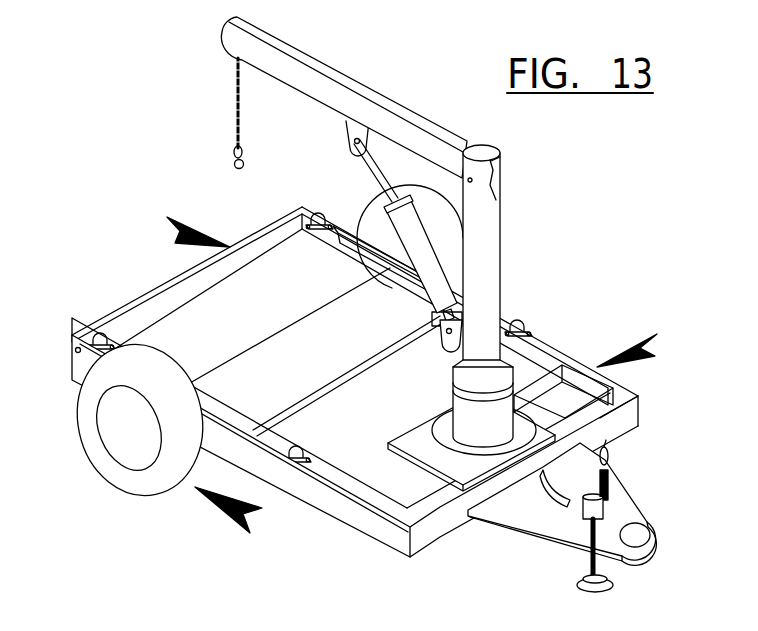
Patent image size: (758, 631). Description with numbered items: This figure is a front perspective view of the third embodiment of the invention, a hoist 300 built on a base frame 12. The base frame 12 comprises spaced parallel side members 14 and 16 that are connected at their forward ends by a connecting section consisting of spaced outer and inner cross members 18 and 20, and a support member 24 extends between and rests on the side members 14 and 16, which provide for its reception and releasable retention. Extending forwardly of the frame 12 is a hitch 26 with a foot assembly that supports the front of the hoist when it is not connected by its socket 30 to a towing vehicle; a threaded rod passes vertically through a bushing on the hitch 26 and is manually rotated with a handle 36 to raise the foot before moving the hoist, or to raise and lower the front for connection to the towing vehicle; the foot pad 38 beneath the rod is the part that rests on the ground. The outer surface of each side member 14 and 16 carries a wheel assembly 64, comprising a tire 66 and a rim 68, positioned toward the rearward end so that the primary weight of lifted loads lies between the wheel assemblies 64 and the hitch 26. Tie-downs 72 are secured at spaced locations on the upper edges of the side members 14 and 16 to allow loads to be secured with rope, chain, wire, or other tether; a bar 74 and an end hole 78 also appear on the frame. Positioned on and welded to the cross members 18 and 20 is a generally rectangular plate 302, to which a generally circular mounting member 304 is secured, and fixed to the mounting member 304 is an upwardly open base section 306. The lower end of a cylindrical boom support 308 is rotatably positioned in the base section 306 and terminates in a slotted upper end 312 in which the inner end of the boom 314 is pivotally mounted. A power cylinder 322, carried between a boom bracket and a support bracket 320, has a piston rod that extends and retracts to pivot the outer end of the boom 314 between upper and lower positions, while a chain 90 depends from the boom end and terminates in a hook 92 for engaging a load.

The base frame 12 is at (656, 340).
The side member 14 is at (305, 492).
The side member 16 is at (540, 346).
The outer cross member 18 is at (636, 418).
The inner cross member 20 is at (387, 482).
The support member 24 is at (143, 300).
The hitch 26 is at (570, 538).
The socket 30 is at (643, 526).
The handle 36 is at (607, 465).
The jack foot / leveling bolt 38 is at (577, 581).
The wheel assembly 64 is at (255, 512).
The tire 66 is at (88, 373).
The rim 68 is at (125, 437).
The tie-downs 72 is at (325, 208).
The support bar 74 is at (350, 265).
The mounting hole 78 is at (50, 324).
The chain 90 is at (236, 101).
The hook 92 is at (237, 166).
The hoist 300 is at (165, 220).
The plate 302 is at (455, 480).
The mounting member 304 is at (462, 428).
The base section 306 is at (457, 397).
The cylindrical boom support 308 is at (492, 240).
The slotted upper end 312 is at (467, 140).
The boom 314 is at (321, 64).
The support bracket 320 is at (457, 341).
The power cylinder 322 is at (430, 277).